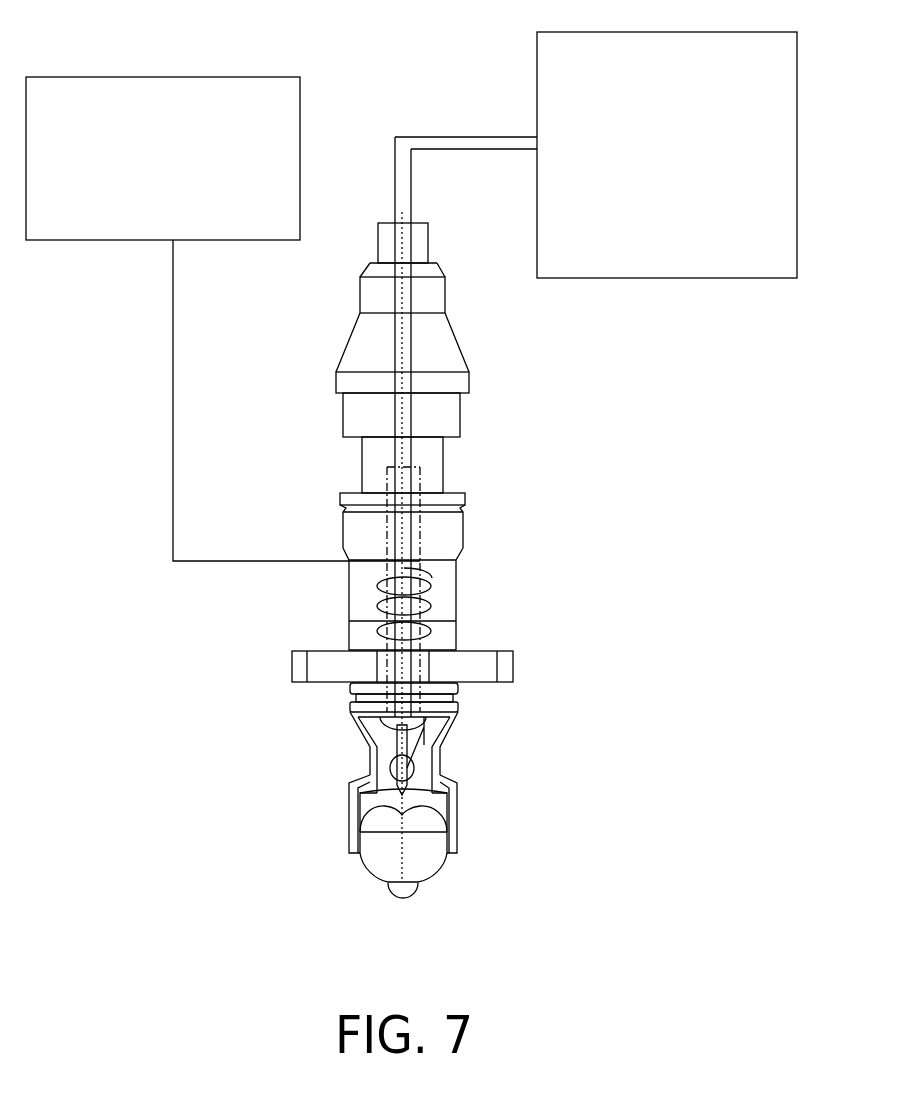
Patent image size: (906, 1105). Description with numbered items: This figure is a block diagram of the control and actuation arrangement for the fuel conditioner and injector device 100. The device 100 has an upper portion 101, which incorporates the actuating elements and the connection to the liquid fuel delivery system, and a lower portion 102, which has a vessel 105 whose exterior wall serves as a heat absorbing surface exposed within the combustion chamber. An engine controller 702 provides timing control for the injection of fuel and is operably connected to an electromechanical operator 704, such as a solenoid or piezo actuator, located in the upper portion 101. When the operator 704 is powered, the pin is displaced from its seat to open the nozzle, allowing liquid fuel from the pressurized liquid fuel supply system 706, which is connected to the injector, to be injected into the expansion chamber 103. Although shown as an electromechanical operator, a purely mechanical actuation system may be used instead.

The fuel conditioner and injector device 100 is at (343, 332).
The upper portion 101 is at (450, 423).
The lower portion 102 is at (458, 695).
The expansion chamber 103 is at (392, 845).
The vessel 105 is at (453, 843).
The engine controller 702 is at (78, 213).
The electromechanical operator 704 is at (435, 598).
The pressurized liquid fuel supply system 706 is at (658, 253).